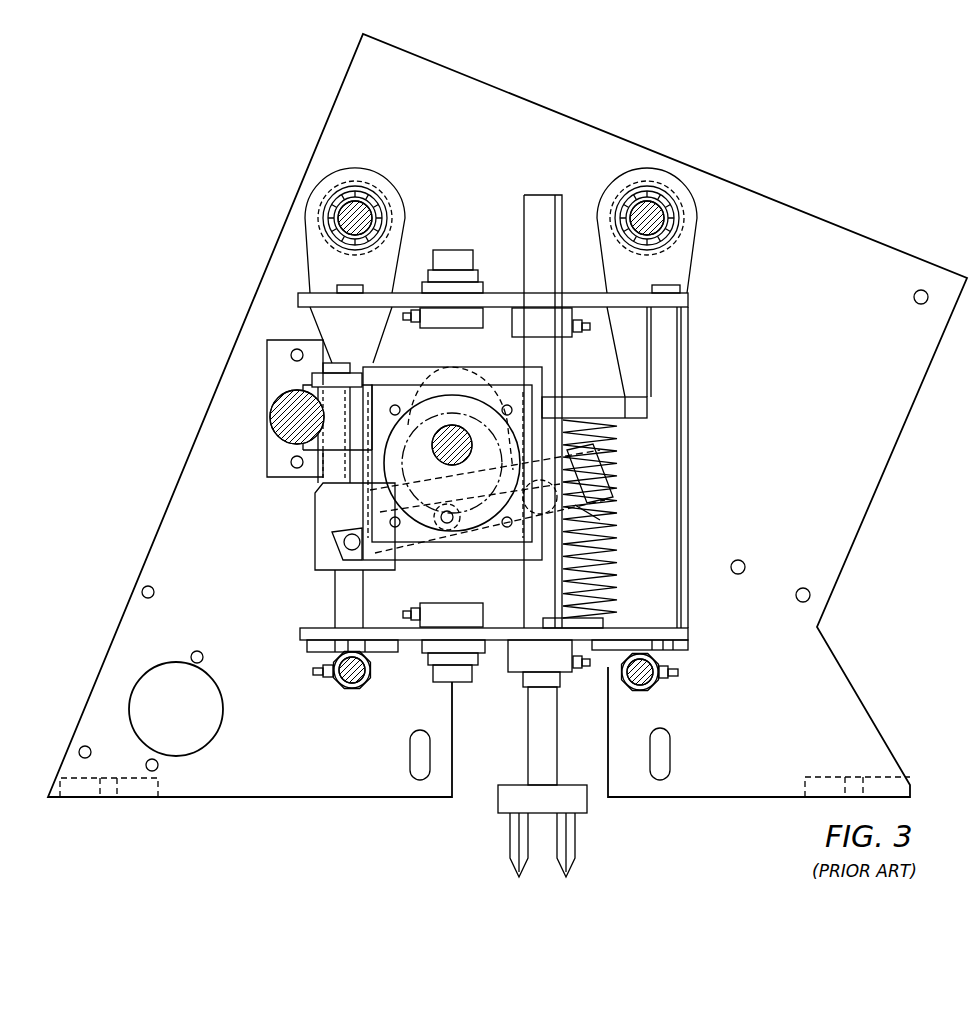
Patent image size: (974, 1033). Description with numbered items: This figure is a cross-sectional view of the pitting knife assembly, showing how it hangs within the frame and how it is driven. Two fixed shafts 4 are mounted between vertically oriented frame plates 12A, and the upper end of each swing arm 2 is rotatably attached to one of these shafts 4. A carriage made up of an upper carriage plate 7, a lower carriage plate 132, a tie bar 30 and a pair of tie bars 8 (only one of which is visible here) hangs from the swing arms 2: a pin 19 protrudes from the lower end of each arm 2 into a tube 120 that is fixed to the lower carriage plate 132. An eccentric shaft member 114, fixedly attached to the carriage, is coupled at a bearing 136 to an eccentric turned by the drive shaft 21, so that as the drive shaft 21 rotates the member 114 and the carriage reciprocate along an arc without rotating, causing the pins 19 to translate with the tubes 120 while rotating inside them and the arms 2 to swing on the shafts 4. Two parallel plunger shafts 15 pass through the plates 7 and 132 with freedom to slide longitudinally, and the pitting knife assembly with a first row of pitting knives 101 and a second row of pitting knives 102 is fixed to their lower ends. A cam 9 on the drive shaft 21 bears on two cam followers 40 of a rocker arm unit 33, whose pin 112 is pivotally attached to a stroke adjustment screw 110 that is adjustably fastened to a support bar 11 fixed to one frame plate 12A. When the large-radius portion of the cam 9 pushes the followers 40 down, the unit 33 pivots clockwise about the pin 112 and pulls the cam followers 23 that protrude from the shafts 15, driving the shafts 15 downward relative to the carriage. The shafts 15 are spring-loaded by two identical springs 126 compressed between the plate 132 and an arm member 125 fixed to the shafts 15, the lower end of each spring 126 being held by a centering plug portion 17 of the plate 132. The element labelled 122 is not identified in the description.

The frame plate 12A is at (400, 77).
The swing arm 2 is at (345, 180).
The shaft 4 is at (333, 205).
The upper carriage plate 7 is at (300, 294).
The tie bar 8 is at (330, 342).
The cam 9 is at (432, 375).
The support bar 11 is at (271, 408).
The eccentric shaft member 114 is at (457, 258).
The plunger shaft 15 is at (540, 195).
The tie bar 30 is at (686, 335).
The arm member 125 is at (650, 408).
The drive shaft 21 is at (472, 442).
The rocker arm unit 33 is at (592, 452).
The spring 126 is at (600, 533).
The cam follower 23 is at (617, 543).
The bearing 136 is at (380, 486).
The stroke adjustment screw 110 is at (370, 522).
The pin 112 is at (342, 547).
The cam follower 122 is at (443, 528).
The cam follower 40 is at (458, 540).
The lower carriage plate 132 is at (306, 628).
The tube 120 is at (338, 692).
The pin 19 is at (352, 692).
The centering plug portion 17 is at (572, 623).
The pitting knife 101 is at (513, 850).
The pitting knife 102 is at (572, 837).